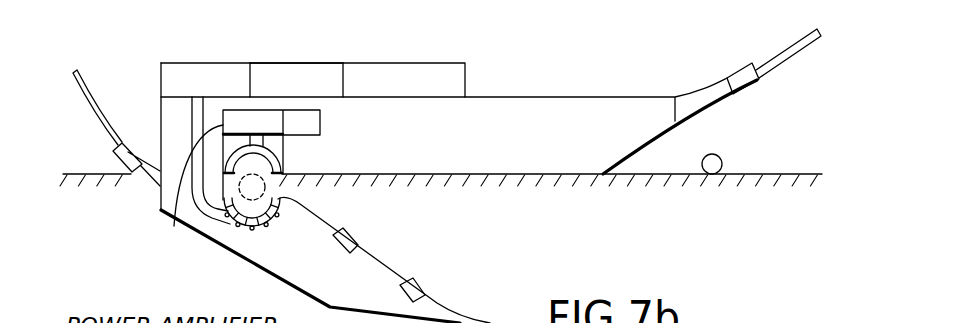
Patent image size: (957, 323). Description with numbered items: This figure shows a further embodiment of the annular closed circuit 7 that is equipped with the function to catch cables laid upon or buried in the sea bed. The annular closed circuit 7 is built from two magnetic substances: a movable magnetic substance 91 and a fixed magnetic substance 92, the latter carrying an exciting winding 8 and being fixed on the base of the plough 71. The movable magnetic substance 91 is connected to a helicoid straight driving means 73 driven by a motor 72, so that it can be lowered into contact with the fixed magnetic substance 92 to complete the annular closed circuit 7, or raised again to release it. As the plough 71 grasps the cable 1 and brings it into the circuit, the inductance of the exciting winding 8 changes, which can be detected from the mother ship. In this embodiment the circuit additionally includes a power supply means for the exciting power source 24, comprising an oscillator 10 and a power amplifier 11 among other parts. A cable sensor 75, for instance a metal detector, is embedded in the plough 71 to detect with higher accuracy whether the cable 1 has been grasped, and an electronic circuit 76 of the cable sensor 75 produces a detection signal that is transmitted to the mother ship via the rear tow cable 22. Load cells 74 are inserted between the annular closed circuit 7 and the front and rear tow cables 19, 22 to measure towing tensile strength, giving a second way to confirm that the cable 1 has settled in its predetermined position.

The cable 1 is at (706, 156).
The annular closed circuit 7 is at (386, 55).
The exciting winding 8 is at (226, 233).
The oscillator 10 is at (298, 72).
The power amplifier 11 is at (245, 57).
The front tow cable 19 is at (805, 38).
The rear tow cable 22 is at (84, 98).
The exciting power source 24 is at (317, 36).
The plough 71 is at (282, 278).
The motor 72 is at (320, 118).
The helicoid straight driving means 73 is at (174, 226).
The load cell 74 is at (127, 148).
The cable sensor 75 is at (413, 280).
The electronic circuit 76 is at (444, 63).
The movable magnetic substance 91 is at (281, 150).
The fixed magnetic substance 92 is at (279, 203).